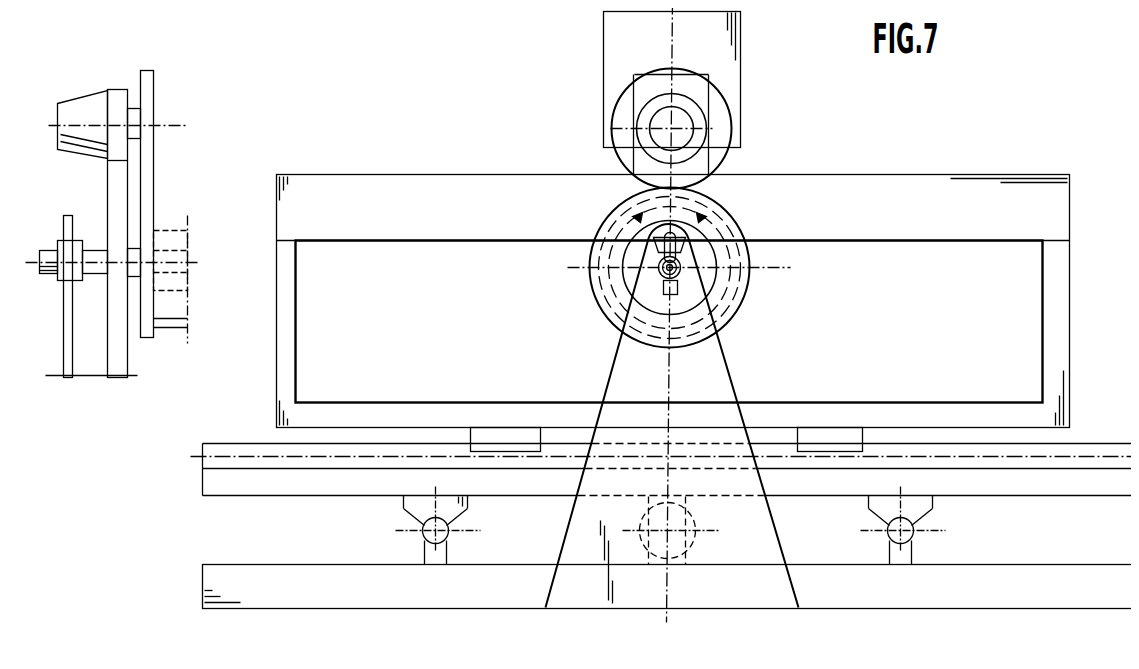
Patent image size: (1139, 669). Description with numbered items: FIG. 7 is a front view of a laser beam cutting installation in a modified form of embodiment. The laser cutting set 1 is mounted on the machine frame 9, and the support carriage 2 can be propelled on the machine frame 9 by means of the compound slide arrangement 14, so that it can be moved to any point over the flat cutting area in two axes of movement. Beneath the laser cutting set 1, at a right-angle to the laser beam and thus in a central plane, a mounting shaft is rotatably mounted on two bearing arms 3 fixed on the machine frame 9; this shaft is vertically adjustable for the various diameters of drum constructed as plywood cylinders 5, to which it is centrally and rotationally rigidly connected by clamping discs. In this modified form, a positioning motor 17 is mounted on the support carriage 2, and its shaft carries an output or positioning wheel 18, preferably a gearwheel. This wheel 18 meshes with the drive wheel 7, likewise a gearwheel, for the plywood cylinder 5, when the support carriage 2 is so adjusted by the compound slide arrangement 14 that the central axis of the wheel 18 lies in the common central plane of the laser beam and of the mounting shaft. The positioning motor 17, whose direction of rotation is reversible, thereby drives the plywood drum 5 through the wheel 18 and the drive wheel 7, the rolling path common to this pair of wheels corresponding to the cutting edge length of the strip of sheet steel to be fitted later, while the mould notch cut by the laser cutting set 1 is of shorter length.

The laser cutting set 1 is at (707, 78).
The support carriage 2 is at (1050, 330).
The bearing arms 3 is at (727, 368).
The plywood cylinder 5 is at (727, 283).
The drive wheel 7 is at (737, 313).
The machine frame 9 is at (722, 48).
The compound slide arrangement 14 is at (1127, 443).
The positioning motor 17 is at (665, 120).
The positioning wheel 18 is at (717, 113).